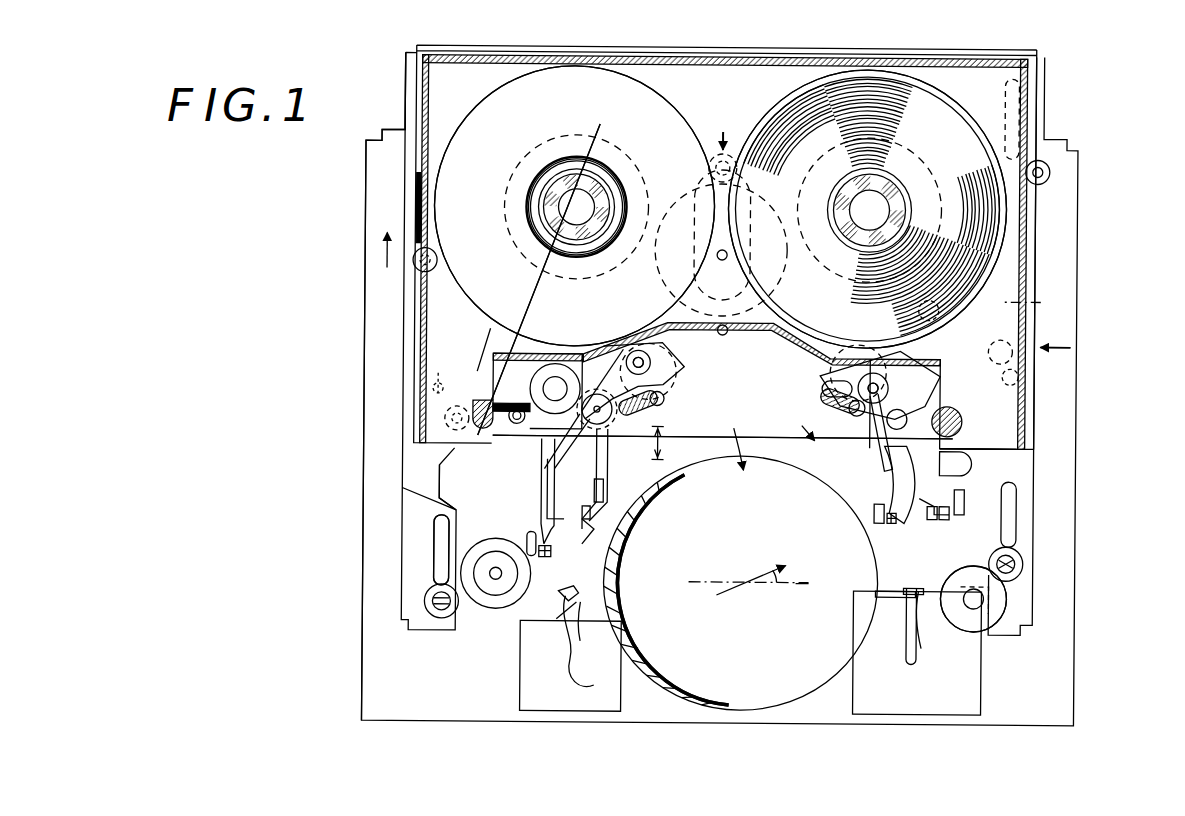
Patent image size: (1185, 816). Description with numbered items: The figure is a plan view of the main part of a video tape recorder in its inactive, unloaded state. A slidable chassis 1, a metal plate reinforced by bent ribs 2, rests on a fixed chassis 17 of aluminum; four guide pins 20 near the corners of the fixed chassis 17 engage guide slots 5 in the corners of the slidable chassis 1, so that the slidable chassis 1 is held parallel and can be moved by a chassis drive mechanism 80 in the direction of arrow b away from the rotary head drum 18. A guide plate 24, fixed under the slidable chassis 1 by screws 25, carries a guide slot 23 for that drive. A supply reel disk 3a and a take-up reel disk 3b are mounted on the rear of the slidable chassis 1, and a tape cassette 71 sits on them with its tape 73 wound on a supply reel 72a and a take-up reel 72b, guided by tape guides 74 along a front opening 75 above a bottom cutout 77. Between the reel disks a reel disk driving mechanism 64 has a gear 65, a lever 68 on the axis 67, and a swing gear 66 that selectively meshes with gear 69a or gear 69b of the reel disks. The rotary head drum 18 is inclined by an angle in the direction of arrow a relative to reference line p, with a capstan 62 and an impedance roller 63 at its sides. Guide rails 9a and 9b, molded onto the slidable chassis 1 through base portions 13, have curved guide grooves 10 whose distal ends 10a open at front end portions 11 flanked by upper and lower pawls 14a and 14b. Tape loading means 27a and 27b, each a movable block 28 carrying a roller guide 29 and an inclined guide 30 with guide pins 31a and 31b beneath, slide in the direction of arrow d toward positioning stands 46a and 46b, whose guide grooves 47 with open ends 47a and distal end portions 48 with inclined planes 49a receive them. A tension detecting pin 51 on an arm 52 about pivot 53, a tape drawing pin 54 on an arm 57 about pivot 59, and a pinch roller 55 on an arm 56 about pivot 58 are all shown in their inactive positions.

The slidable chassis 1 is at (412, 363).
The ribs 2 is at (1034, 50).
The supply reel disk 3a is at (875, 214).
The take-up reel disk 3b is at (575, 200).
The guide slots 5 is at (418, 203).
The guide rail 9a is at (908, 505).
The guide rail 9b is at (543, 492).
The guide grooves 10 is at (548, 505).
The distal ends of guide grooves 10a is at (584, 540).
The front end portions of guide rails 11 is at (548, 558).
The base portions 13 is at (597, 355).
The upper pawl 14a is at (603, 515).
The lower pawl 14b is at (500, 608).
The fixed chassis 17 is at (380, 380).
The rotary head drum 18 is at (630, 655).
The guide pins 20 is at (418, 268).
The guide slot 23 is at (1025, 345).
The guide plate 24 is at (1045, 302).
The screws 25 is at (923, 305).
The tape loading means 27a is at (815, 375).
The tape loading means 27b is at (600, 345).
The movable block 28 is at (633, 355).
The vertical roller guide 29 is at (606, 422).
The inclined guide 30 is at (665, 397).
The guide pin 31a is at (642, 350).
The guide pin 31b is at (595, 432).
The positioning stand 46a is at (950, 688).
The positioning stand 46b is at (535, 690).
The guide grooves 47 is at (576, 650).
The distal ends of guide grooves 47a is at (566, 622).
The distal end portions 48 is at (586, 618).
The inclined plane 49a is at (570, 592).
The tension detecting pin 51 is at (955, 438).
The arm 52 is at (962, 412).
The pivot 53 is at (1075, 346).
The tape drawing pin 54 is at (515, 426).
The pinch roller 55 is at (540, 375).
The arm 56 is at (490, 365).
The arm 57 is at (475, 445).
The pivot 58 is at (440, 380).
The pivot 59 is at (445, 422).
The capstan 62 is at (443, 548).
The impedance roller 63 is at (972, 625).
The reel disk driving mechanism 64 is at (721, 128).
The gear 65 is at (728, 158).
The swing gear 66 is at (668, 205).
The axis 67 is at (711, 158).
The lever 68 is at (700, 195).
The gear 69a is at (810, 178).
The gear 69b is at (538, 170).
The tape cassette 71 is at (417, 92).
The supply reel 72a is at (965, 118).
The take-up reel 72b is at (470, 138).
The magnetic tape 73 is at (600, 225).
The tape guides 74 is at (478, 430).
The front opening 75 is at (745, 472).
The bottom cutout 77 is at (722, 262).
The chassis drive mechanism 80 is at (1075, 346).
The arrow a is at (760, 578).
The arrow b is at (384, 258).
The arrow d is at (733, 430).
The reference line P p is at (797, 584).